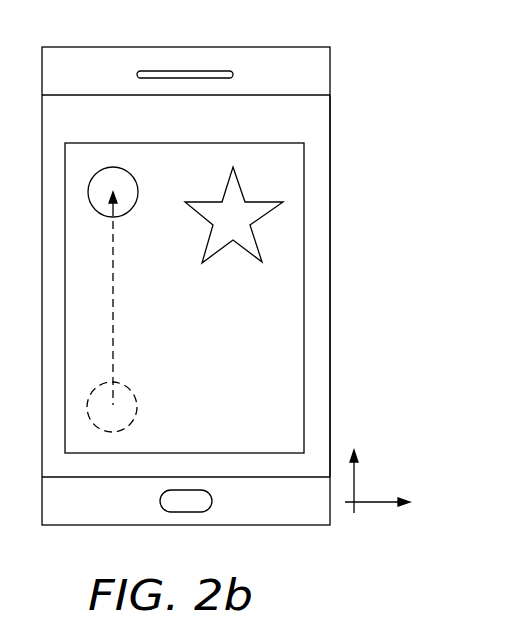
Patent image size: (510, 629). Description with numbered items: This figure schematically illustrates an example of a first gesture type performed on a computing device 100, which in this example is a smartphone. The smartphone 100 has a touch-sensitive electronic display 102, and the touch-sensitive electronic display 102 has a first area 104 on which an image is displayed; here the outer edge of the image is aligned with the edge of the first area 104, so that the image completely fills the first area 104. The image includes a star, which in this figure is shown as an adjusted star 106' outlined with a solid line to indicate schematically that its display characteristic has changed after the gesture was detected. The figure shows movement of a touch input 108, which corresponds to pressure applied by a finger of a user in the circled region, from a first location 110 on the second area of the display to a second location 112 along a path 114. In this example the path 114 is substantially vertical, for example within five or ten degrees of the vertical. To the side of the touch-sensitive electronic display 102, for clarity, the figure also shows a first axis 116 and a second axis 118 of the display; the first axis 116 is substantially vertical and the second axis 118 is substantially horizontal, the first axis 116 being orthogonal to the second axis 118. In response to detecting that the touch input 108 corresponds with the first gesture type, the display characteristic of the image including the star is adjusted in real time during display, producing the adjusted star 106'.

The computing device 100 is at (143, 47).
The touch-sensitive electronic display 102 is at (329, 232).
The first area 104 is at (305, 327).
The adjusted star 106' is at (240, 211).
The touch input 108 is at (126, 173).
The first location 110 is at (134, 402).
The second location 112 is at (128, 212).
The path 114 is at (113, 303).
The first axis 116 is at (358, 452).
The second axis 118 is at (380, 500).